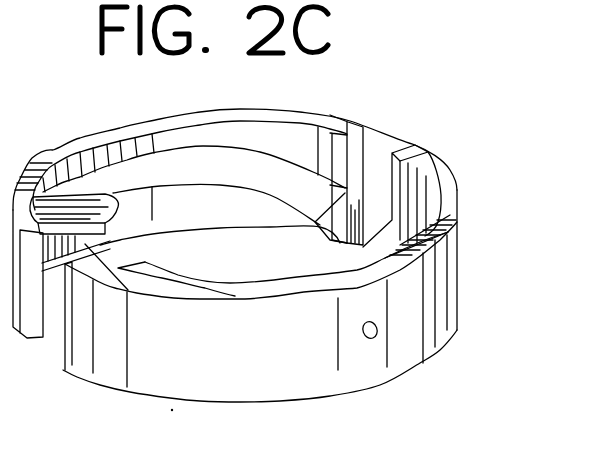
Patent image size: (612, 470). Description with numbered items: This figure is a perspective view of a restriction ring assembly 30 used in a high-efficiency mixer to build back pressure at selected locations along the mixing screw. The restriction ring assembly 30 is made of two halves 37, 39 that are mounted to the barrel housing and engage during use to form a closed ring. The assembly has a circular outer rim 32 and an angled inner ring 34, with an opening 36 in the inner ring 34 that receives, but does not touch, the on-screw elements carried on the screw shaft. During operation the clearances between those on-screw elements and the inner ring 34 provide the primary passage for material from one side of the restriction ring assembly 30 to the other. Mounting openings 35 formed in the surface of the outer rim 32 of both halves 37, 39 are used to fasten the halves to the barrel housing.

The restriction ring assembly 30 is at (408, 368).
The circular outer rim 32 is at (457, 240).
The inner ring 34 is at (77, 192).
The mounting openings 35 is at (362, 332).
The opening 36 is at (280, 250).
The half 37 is at (120, 268).
The half 39 is at (357, 183).